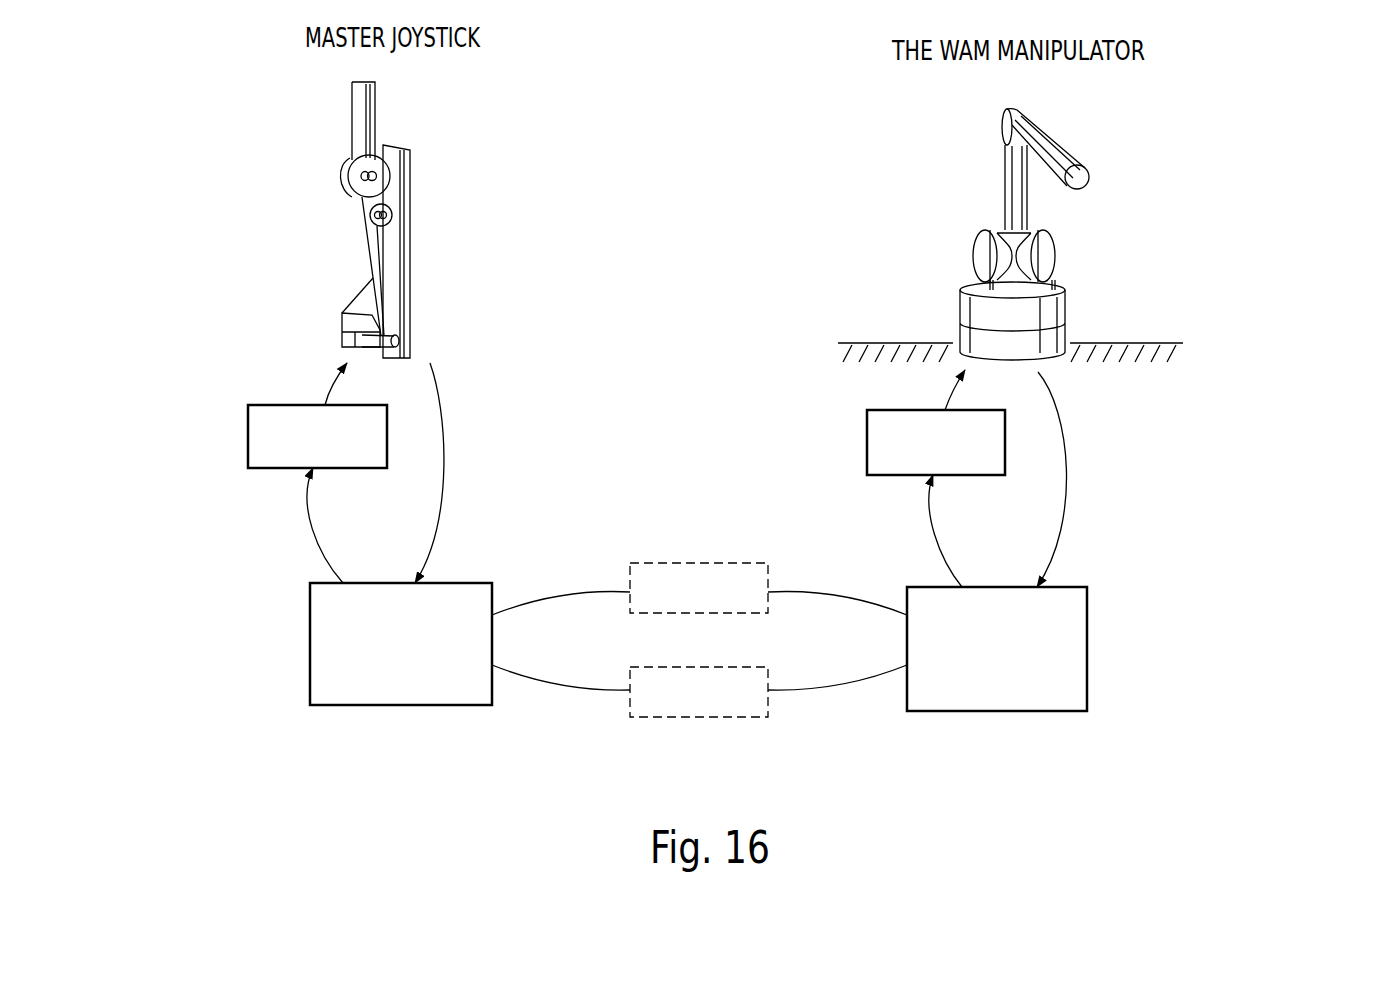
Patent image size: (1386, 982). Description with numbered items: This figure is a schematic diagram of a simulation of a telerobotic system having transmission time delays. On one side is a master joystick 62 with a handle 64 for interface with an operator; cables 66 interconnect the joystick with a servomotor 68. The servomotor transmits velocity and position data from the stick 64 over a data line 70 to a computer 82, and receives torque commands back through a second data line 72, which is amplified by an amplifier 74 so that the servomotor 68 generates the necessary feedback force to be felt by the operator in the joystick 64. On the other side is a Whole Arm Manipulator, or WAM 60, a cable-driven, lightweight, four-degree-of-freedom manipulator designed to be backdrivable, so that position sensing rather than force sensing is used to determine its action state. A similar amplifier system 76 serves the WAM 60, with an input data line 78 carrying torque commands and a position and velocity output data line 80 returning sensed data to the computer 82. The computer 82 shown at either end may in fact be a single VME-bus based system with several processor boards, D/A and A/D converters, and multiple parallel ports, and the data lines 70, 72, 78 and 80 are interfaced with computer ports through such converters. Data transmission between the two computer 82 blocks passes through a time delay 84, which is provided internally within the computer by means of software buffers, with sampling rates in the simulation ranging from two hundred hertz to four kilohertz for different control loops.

The Whole Arm Manipulator (WAM) 60 is at (1056, 133).
The master joystick 62 is at (394, 209).
The handle 64 is at (370, 90).
The cables 66 is at (392, 230).
The servomotor 68 is at (352, 308).
The data line 70 is at (447, 378).
The second data line 72 is at (318, 525).
The amplifier 74 is at (387, 420).
The amplifier system 76 is at (1005, 432).
The input data line 78 is at (937, 520).
The position and velocity output data line 80 is at (1048, 388).
The computer 82 is at (492, 697).
The time delay 84 is at (768, 705).